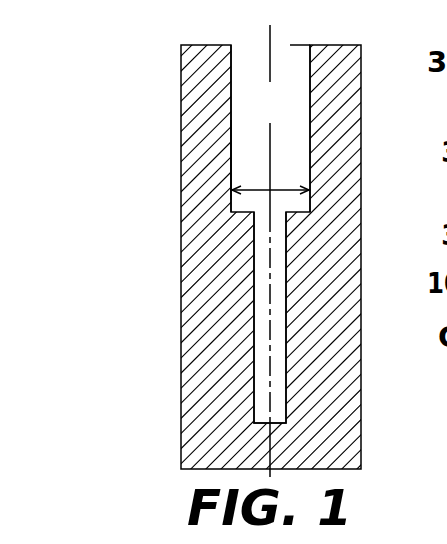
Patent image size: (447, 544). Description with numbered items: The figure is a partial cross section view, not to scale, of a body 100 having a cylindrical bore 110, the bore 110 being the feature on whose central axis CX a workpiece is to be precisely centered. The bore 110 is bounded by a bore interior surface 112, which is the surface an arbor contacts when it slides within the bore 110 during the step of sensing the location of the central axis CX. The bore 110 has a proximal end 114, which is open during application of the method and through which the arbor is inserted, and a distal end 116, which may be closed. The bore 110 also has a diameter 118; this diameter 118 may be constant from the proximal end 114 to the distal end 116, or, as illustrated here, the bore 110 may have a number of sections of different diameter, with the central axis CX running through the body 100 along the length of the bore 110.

The body 100 is at (181, 102).
The cylindrical bore 110 is at (231, 150).
The bore interior surface 112 is at (295, 117).
The proximal end 114 is at (300, 45).
The distal end 116 is at (279, 412).
The diameter 118 is at (236, 189).
The central axis CX is at (268, 37).